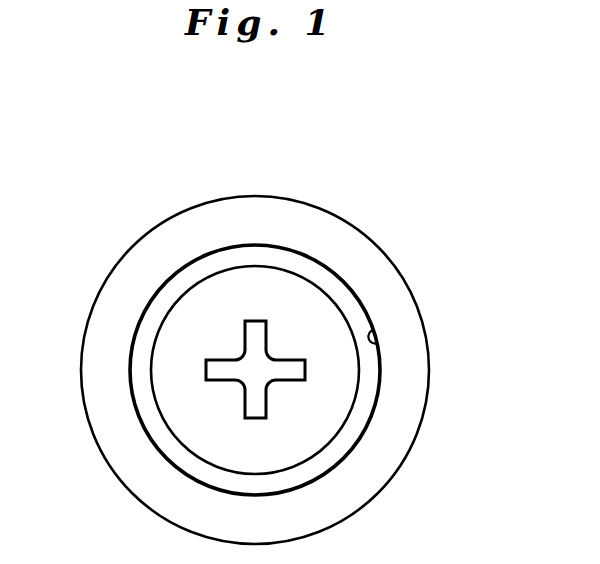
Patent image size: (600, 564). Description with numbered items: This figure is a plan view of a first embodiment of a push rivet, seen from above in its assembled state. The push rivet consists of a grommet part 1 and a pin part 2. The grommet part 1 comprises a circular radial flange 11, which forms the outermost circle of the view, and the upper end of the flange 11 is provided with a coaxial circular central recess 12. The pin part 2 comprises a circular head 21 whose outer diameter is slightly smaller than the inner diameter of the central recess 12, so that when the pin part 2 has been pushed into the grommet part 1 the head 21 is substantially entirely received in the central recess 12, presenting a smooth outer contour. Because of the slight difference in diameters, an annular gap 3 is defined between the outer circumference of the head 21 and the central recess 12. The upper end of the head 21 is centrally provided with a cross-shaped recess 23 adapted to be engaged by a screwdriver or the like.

The grommet part 1 is at (263, 344).
The circular radial flange 11 is at (340, 230).
The circular central recess 12 is at (378, 345).
The pin part 2 is at (257, 309).
The circular head 21 is at (192, 307).
The cross-shaped recess 23 is at (255, 321).
The annular gap 3 is at (147, 337).